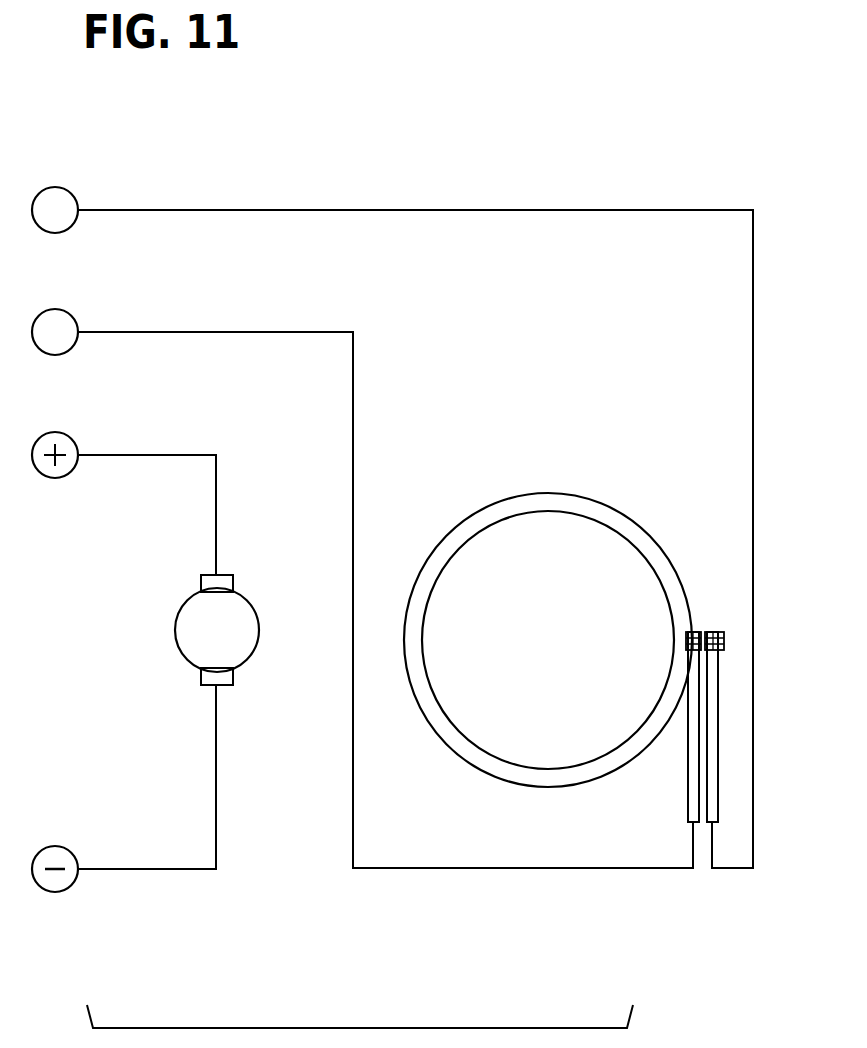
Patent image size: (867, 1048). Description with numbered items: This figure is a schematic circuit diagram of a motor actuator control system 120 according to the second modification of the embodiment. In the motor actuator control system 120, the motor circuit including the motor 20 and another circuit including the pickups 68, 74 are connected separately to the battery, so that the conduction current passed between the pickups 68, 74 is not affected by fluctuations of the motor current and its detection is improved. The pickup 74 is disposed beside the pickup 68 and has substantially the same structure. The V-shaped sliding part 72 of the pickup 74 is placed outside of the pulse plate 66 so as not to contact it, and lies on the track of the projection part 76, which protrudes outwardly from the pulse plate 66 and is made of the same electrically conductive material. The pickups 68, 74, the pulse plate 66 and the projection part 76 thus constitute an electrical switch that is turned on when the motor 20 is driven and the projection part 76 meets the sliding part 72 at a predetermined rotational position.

The motor actuator control system 120 is at (525, 168).
The motor 20 is at (183, 650).
The pulse plate 66 is at (523, 500).
The pickup 68 is at (688, 812).
The pickup 74 is at (716, 812).
The sliding part 72 is at (688, 636).
The projection part 76 is at (728, 632).